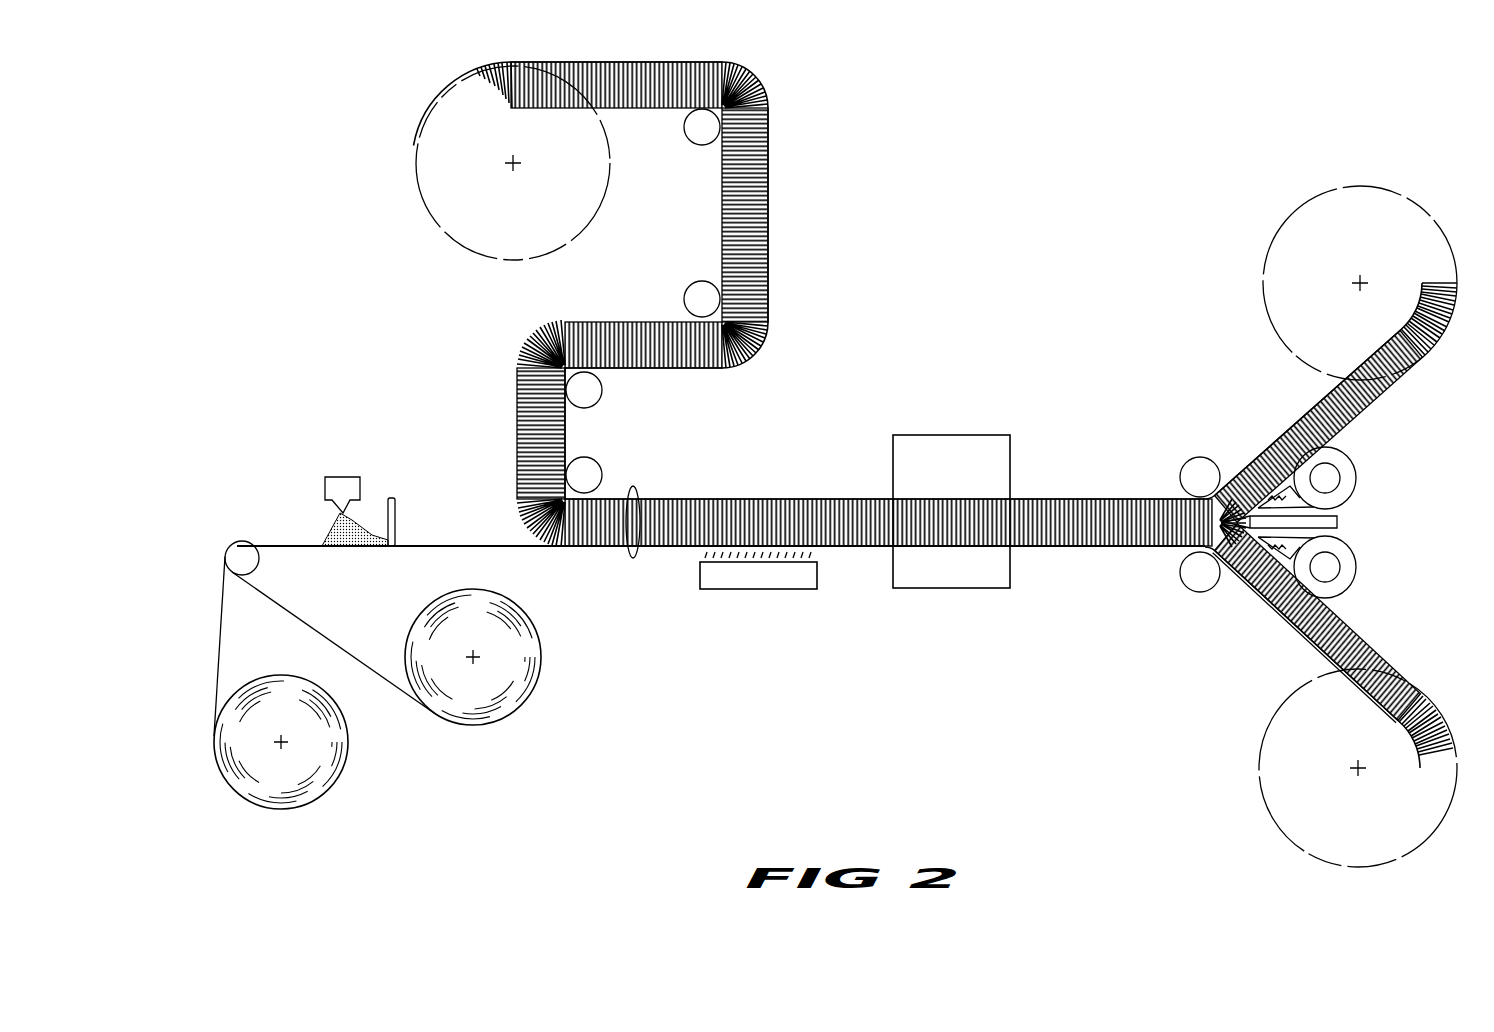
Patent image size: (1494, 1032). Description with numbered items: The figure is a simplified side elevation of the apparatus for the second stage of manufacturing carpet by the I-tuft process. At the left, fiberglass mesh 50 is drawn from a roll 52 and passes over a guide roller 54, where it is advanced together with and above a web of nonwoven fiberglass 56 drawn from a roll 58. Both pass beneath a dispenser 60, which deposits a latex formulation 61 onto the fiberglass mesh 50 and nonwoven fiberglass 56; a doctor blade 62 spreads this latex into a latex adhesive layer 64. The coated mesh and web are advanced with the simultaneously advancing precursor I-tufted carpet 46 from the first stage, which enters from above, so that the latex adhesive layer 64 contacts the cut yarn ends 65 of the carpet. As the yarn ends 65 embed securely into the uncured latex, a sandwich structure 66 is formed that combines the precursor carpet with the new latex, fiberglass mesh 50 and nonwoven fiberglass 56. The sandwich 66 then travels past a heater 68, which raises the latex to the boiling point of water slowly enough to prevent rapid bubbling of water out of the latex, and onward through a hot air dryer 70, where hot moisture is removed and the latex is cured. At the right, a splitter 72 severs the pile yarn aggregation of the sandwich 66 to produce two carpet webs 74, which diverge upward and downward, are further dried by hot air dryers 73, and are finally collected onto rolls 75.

The precursor I-tufted carpet 46 is at (710, 212).
The fiberglass mesh 50 is at (216, 650).
The roll 52 is at (248, 800).
The guide roller 54 is at (240, 557).
The web of nonwoven fiberglass 56 is at (313, 631).
The roll 58 is at (520, 698).
The dispenser 60 is at (333, 477).
The latex formulation 61 is at (320, 532).
The doctor blade 62 is at (394, 505).
The latex adhesive layer 64 is at (472, 545).
The yarn ends 65 is at (513, 418).
The sandwich structure 66 is at (636, 487).
The heater 68 is at (765, 577).
The hot air dryer 70 is at (955, 447).
The splitter 72 is at (1338, 520).
The hot air dryers 73 is at (1345, 468).
The carpet webs 74 is at (1267, 449).
The rolls 75 is at (1408, 214).